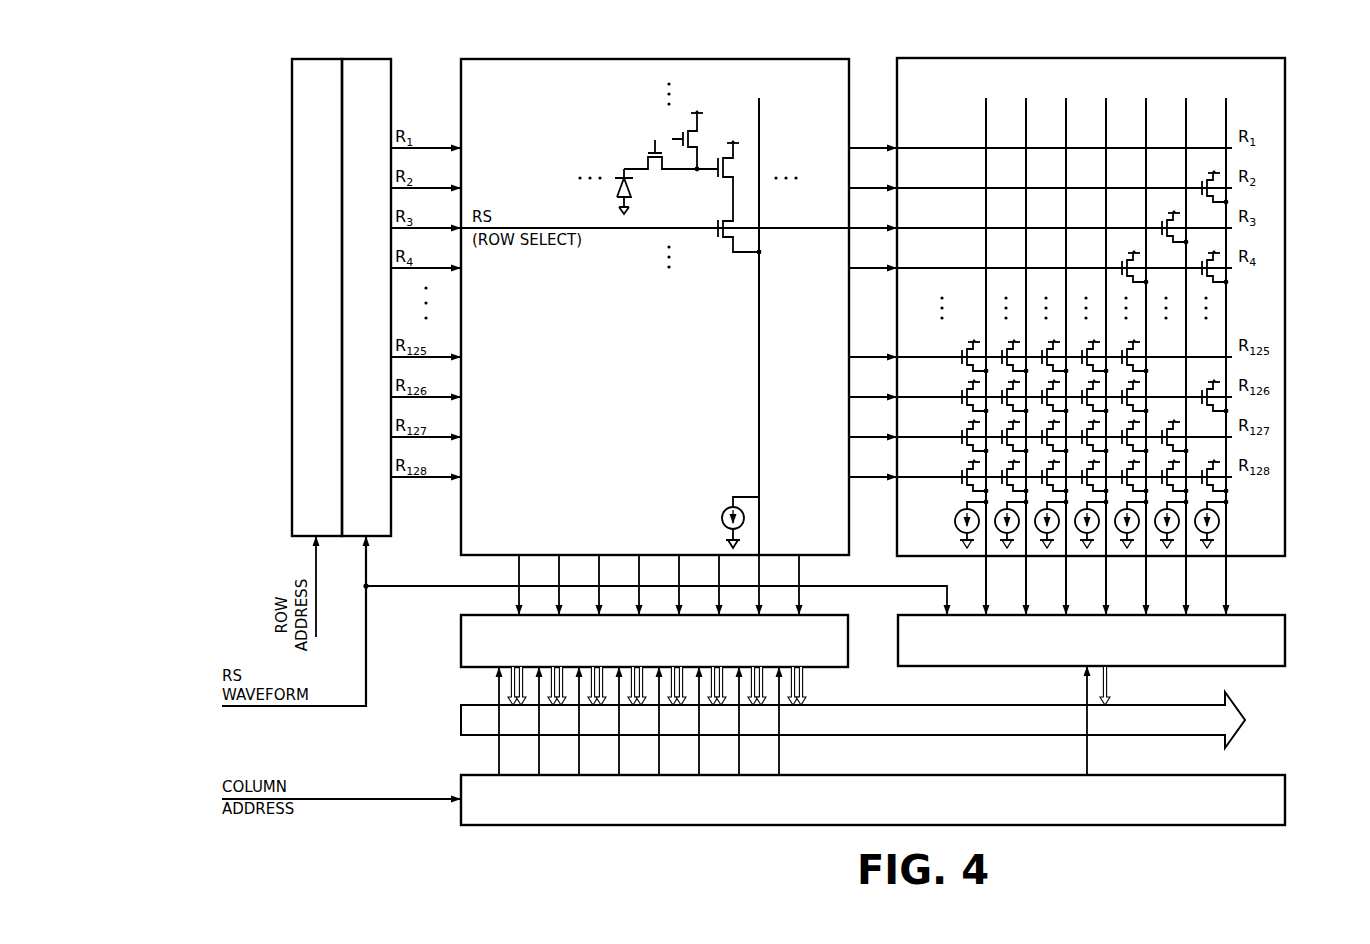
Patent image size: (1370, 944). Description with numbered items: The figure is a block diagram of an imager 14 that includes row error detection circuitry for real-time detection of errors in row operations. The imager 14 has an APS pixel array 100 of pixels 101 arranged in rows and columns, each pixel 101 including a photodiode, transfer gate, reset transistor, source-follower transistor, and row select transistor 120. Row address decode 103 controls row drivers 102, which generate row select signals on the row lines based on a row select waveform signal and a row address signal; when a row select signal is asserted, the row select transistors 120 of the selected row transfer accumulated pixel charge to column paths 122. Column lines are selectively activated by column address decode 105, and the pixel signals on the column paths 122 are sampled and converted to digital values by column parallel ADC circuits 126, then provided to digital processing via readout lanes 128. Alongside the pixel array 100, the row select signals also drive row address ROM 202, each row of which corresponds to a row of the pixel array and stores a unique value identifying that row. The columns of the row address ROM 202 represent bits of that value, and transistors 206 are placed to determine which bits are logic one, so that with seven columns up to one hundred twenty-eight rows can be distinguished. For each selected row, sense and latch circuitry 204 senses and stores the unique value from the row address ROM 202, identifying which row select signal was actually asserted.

The imager 14 is at (256, 66).
The array of pixels 100 is at (470, 100).
The pixel 101 is at (632, 130).
The row drivers 102 is at (380, 506).
The row address decoder 103 is at (300, 137).
The column address decode 105 is at (530, 823).
The row select transistor 120 is at (720, 220).
The column path 122 is at (762, 158).
The column parallel ADC circuits 126 is at (468, 640).
The readout lanes 128 is at (1130, 736).
The row address ROM 202 is at (905, 100).
The sense and latch circuitry 204 is at (908, 640).
The transistors 206 is at (1201, 183).